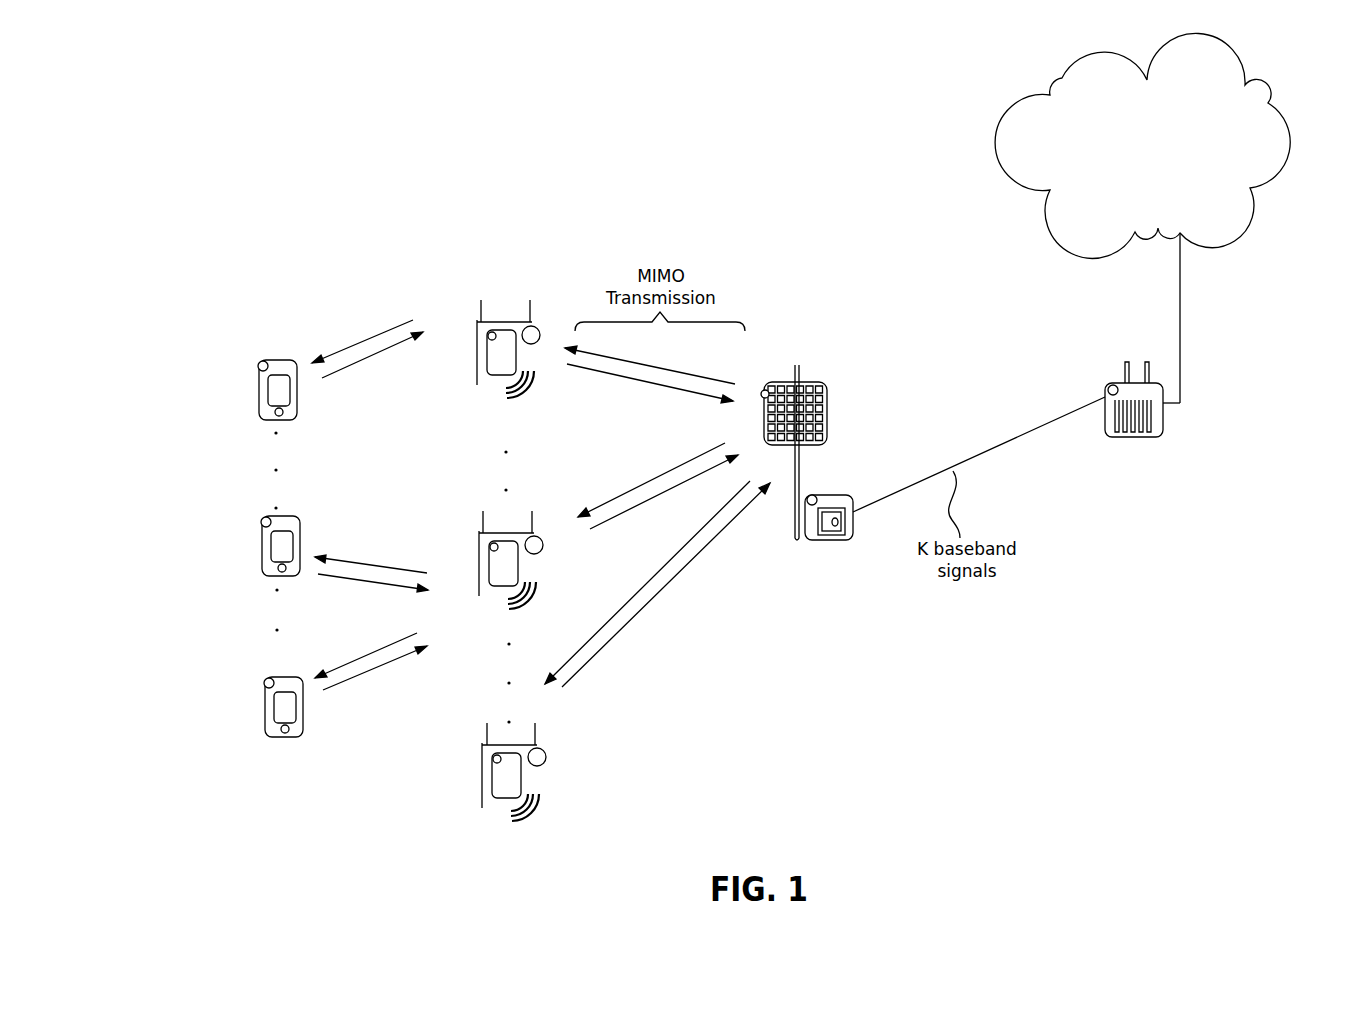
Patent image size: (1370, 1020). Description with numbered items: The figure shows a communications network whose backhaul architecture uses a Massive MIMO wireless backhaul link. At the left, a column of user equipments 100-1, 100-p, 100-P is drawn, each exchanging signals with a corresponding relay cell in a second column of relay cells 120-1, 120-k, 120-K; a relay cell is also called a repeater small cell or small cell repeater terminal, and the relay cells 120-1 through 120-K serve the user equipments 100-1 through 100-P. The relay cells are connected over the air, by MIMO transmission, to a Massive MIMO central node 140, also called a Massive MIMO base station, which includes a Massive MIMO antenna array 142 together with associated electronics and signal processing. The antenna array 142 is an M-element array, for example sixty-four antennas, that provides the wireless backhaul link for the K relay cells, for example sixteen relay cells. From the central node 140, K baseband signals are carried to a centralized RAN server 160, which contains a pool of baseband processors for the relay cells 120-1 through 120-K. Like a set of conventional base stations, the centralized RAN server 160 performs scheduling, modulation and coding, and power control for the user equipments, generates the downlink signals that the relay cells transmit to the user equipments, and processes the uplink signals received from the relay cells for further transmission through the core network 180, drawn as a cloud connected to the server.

The user equipment 100-1 is at (238, 374).
The user equipment 100-p is at (238, 537).
The user equipment 100-P is at (242, 700).
The relay cell 120-1 is at (461, 298).
The relay cell 120-k is at (461, 511).
The relay cell 120-K is at (466, 732).
The Massive MIMO central node 140 is at (819, 442).
The Massive MIMO antenna array 142 is at (827, 365).
The centralized RAN server 160 is at (1210, 406).
The core network 180 is at (1215, 233).